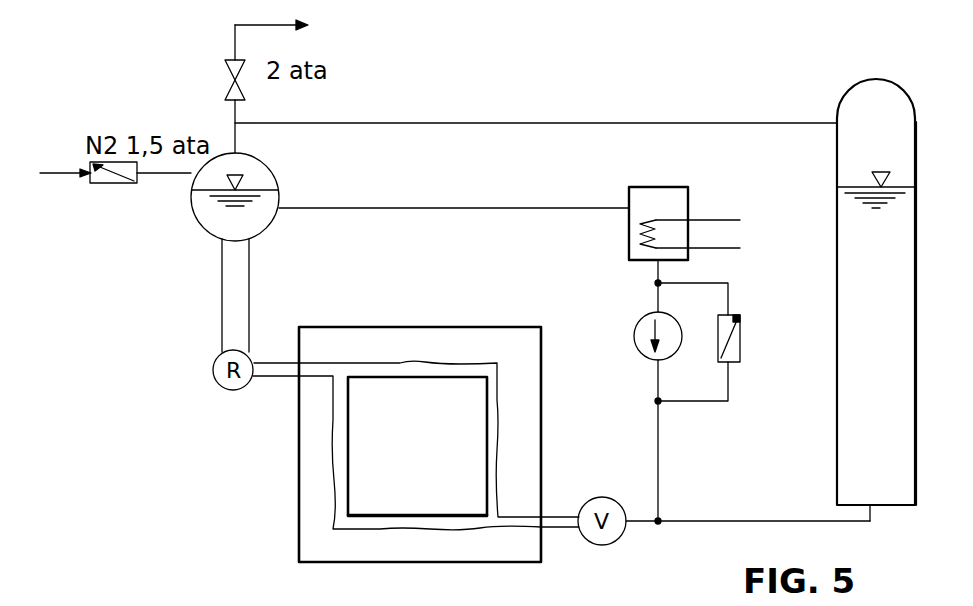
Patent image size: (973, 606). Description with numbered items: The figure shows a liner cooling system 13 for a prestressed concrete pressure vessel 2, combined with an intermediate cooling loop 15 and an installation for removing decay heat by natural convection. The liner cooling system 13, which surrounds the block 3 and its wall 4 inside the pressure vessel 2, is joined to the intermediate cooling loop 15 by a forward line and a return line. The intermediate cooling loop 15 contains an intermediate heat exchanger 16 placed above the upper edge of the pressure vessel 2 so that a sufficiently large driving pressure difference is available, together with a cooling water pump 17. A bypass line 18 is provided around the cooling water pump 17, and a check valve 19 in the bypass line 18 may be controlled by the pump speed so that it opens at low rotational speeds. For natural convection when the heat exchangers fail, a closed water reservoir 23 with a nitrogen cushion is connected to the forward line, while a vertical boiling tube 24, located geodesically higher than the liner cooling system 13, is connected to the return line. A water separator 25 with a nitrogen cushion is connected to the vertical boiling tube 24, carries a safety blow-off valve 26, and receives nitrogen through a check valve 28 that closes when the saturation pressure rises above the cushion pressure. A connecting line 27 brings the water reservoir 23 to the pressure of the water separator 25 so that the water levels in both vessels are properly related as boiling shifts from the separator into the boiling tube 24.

The prestressed concrete pressure vessel 2 is at (310, 529).
The heated block 3 is at (463, 498).
The block wall 4 is at (384, 517).
The liner cooling system 13 is at (333, 473).
The intermediate cooling loop 15 is at (541, 207).
The intermediate heat exchanger 16 is at (682, 200).
The cooling water pump 17 is at (634, 334).
The bypass line 18 is at (703, 402).
The check valve 19 is at (741, 342).
The water reservoir 23 is at (903, 221).
The vertical boiling tube 24 is at (227, 281).
The water separator 25 is at (273, 176).
The safety blow-off valve 26 is at (225, 73).
The connecting line 27 is at (613, 122).
The check valve 28 is at (104, 184).